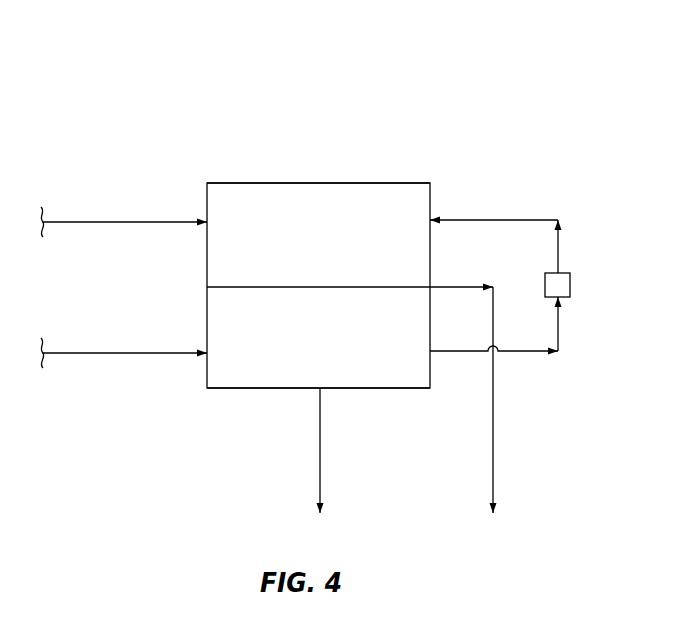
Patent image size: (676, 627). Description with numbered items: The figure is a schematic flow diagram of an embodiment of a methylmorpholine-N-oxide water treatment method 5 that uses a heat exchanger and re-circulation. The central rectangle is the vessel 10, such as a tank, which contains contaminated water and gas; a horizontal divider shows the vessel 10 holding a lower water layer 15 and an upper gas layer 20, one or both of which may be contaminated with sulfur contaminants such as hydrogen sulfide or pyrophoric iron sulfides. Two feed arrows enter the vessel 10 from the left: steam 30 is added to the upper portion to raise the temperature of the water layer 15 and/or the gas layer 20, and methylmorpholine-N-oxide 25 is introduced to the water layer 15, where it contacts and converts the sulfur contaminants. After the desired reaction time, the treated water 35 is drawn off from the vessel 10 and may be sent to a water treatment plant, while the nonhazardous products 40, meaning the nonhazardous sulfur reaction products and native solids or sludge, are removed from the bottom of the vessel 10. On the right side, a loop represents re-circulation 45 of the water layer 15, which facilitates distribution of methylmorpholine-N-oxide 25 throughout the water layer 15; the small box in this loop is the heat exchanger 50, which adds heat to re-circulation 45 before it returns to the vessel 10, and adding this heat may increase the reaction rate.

The methylmorpholine-N-oxide water treatment method 5 is at (572, 80).
The vessel 10 is at (272, 183).
The water layer 15 is at (258, 367).
The gas layer 20 is at (358, 207).
The methylmorpholine-N-oxide 25 is at (123, 353).
The steam 30 is at (123, 222).
The treated water 35 is at (494, 452).
The nonhazardous products 40 is at (320, 452).
The re-circulation 45 is at (492, 218).
The heat exchanger 50 is at (570, 285).